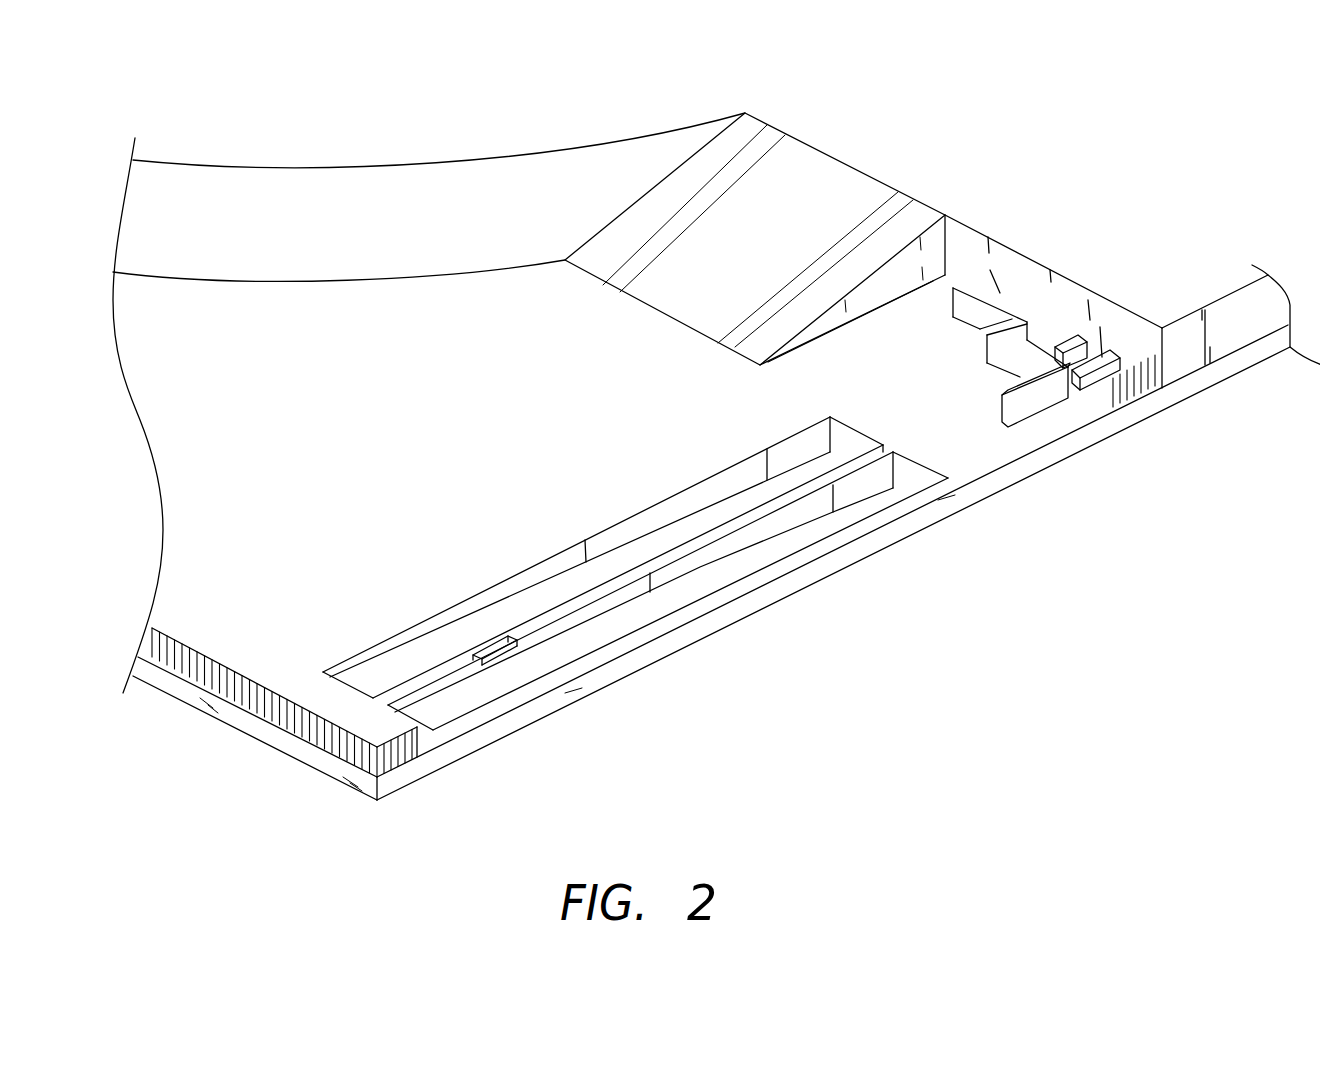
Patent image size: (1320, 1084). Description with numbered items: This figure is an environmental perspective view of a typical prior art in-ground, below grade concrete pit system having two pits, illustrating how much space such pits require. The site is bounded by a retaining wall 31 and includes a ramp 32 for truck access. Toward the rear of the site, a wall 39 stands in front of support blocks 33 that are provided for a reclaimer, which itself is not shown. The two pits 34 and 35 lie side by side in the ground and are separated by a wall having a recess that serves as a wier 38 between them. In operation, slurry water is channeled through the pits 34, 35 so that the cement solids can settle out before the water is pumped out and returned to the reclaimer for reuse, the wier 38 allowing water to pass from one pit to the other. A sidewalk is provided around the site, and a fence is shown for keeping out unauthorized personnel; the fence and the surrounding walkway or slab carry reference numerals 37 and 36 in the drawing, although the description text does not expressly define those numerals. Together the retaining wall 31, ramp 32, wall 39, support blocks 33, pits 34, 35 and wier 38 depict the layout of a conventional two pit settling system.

The retaining wall 31 is at (312, 260).
The ramp 32 is at (842, 180).
The support blocks 33 is at (1080, 383).
The pit 34 is at (435, 640).
The pit 35 is at (607, 625).
The base plate 36 is at (395, 783).
The fence of pins 37 is at (183, 658).
The wier 38 is at (510, 652).
The wall 39 is at (1012, 417).